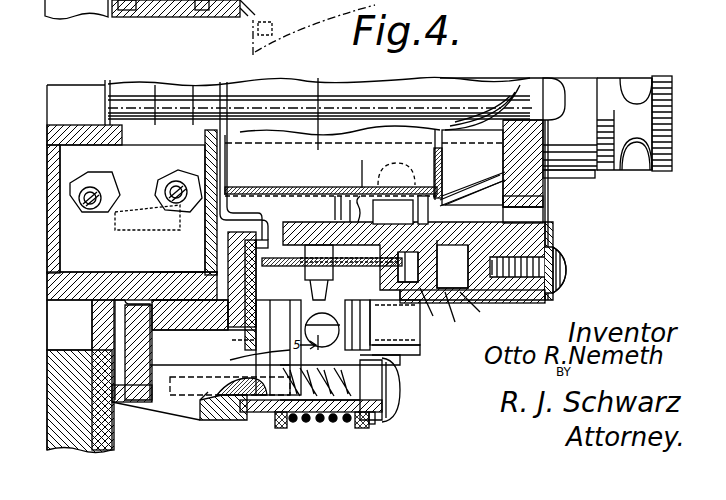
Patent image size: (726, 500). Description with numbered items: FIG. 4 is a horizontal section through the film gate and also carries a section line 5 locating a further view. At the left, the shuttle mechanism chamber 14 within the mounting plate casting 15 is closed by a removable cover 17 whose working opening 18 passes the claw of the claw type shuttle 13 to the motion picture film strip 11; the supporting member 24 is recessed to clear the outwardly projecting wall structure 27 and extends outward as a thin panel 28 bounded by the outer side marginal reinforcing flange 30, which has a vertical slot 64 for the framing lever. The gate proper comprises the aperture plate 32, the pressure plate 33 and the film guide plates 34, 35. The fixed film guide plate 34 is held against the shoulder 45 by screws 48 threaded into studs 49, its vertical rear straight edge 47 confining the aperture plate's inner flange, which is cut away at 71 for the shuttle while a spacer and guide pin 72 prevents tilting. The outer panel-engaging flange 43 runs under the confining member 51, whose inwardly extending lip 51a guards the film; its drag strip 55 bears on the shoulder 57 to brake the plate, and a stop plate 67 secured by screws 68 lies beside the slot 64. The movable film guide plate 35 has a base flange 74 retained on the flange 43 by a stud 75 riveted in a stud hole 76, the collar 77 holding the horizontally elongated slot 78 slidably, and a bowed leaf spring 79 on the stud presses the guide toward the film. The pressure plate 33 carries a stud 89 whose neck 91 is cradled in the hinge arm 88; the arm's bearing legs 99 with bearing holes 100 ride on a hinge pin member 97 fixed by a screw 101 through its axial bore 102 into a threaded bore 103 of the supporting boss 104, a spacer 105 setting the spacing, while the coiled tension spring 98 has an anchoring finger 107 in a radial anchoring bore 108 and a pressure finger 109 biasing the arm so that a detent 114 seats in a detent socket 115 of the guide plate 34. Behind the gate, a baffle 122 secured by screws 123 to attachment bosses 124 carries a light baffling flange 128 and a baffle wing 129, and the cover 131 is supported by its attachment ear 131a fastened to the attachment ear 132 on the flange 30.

The section line 5 is at (310, 96).
The motion picture film strip 11 is at (363, 209).
The claw type shuttle 13 is at (272, 200).
The shuttle mechanism chamber 14 is at (65, 250).
The mounting plate casting 15 is at (65, 410).
The removable cover 17 is at (212, 260).
The working opening 18 is at (210, 238).
The supporting member 24 is at (140, 400).
The outwardly projecting wall structure 27 is at (187, 305).
The panel 28 is at (450, 232).
The outer side marginal reinforcing flange 30 is at (560, 178).
The aperture plate 32 is at (318, 182).
The pressure plate 33 is at (332, 316).
The film guide plate 34 is at (242, 277).
The film guide plate 35 is at (382, 325).
The panel-engaging flange 43 is at (412, 195).
The shoulder 45 is at (190, 282).
The vertical rear straight edge 47 is at (243, 226).
The screws 48 is at (127, 8).
The studs 49 is at (203, 8).
The confining member 51 is at (527, 300).
The inwardly extending lip 51a is at (458, 316).
The drag strip 55 is at (471, 200).
The shoulder 57 is at (511, 205).
The vertical slot 64 is at (535, 216).
The stop plate 67 is at (553, 242).
The screws 68 is at (562, 266).
The cutaway 71 is at (266, 238).
The spacer and guide pin 72 is at (340, 196).
The base flange 74 is at (452, 266).
The stud 75 is at (432, 310).
The stud hole 76 is at (430, 210).
The collar 77 is at (462, 284).
The horizontally elongated slot 78 is at (421, 269).
The bowed leaf spring 79 is at (393, 213).
The hinge arm 88 is at (249, 357).
The stud 89 is at (422, 340).
The neck 91 is at (312, 310).
The hinge pin member 97 is at (320, 405).
The coiled tension spring 98 is at (340, 424).
The bearing legs 99 is at (362, 428).
The bearing holes 100 is at (281, 428).
The screw 101 is at (388, 415).
The axial bore 102 is at (240, 372).
The threaded bore 103 is at (222, 395).
The supporting boss 104 is at (208, 400).
The spacer 105 is at (244, 418).
The anchoring finger 107 is at (303, 424).
The radial anchoring bore 108 is at (250, 400).
The pressure finger 109 is at (402, 358).
The detent 114 is at (262, 318).
The detent socket 115 is at (228, 339).
The baffle 122 is at (283, 190).
The screws 123 is at (405, 145).
The attachment bosses 124 is at (368, 186).
The light baffling flange 128 is at (473, 167).
The baffle wing 129 is at (470, 120).
The cover 131 is at (535, 78).
The attachment ear 131a is at (588, 102).
The attachment ear 132 is at (520, 125).